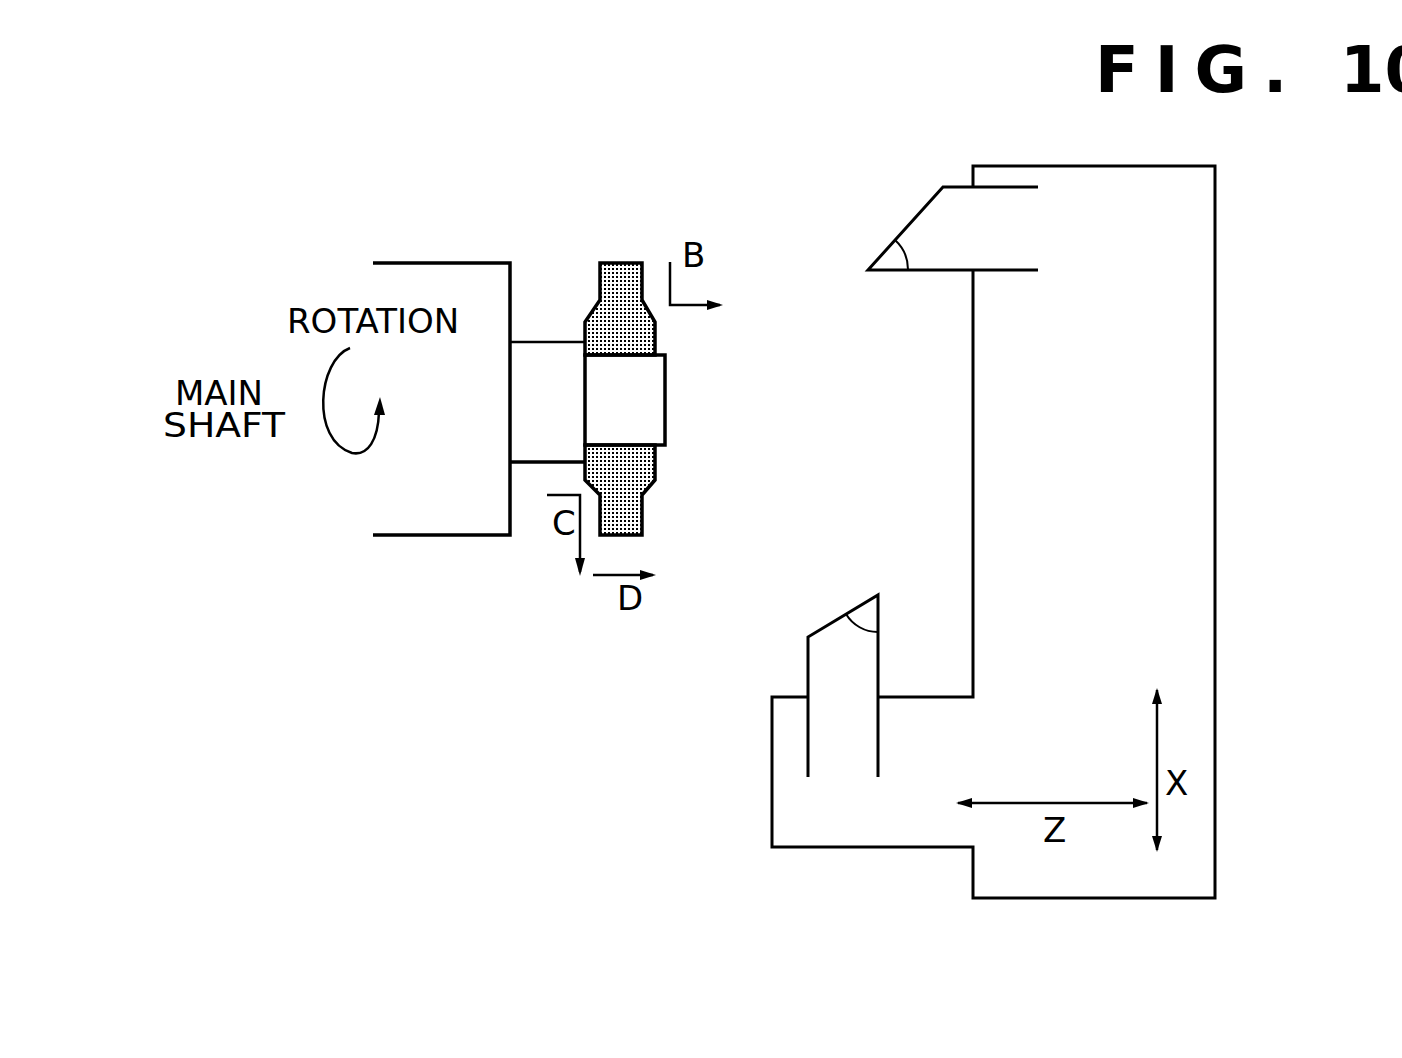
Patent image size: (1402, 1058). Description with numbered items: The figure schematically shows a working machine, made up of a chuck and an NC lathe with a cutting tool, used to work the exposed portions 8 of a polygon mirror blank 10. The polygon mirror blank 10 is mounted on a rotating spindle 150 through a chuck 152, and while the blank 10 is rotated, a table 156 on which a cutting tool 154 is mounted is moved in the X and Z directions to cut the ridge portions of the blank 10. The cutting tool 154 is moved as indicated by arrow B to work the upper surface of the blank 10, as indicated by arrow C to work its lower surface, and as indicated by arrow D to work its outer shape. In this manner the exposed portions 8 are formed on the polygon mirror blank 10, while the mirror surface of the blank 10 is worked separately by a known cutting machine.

The exposed portions 8 is at (598, 288).
The polygon mirror blank 10 is at (624, 263).
The rotating spindle 150 is at (417, 270).
The chuck 152 is at (537, 445).
The cutting tool 154 is at (870, 663).
The table 156 is at (1192, 432).